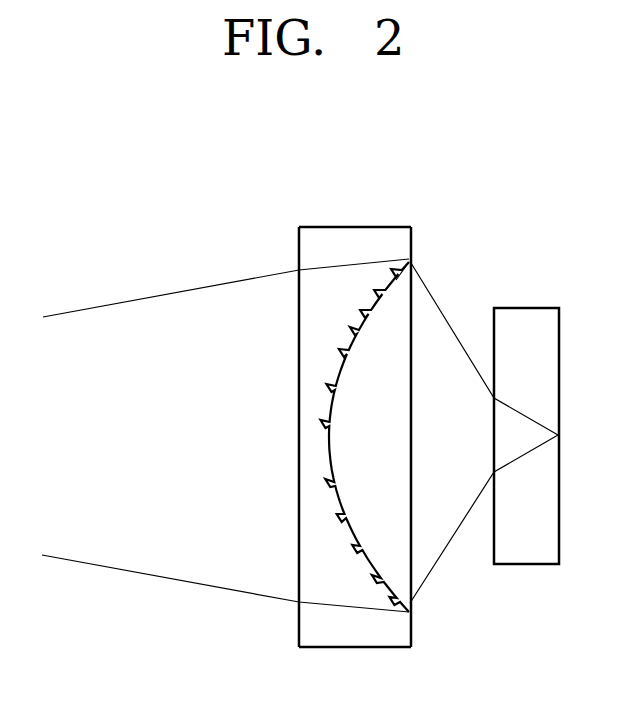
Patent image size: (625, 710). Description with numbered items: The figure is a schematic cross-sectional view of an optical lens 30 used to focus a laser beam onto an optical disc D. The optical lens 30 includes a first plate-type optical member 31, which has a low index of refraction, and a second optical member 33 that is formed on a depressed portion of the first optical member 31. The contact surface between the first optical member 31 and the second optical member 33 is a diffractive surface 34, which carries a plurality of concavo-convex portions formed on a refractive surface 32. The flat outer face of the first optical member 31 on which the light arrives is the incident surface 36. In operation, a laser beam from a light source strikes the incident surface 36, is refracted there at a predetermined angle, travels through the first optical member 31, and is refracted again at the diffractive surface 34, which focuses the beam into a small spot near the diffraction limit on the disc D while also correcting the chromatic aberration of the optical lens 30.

The optical lens 30 is at (377, 207).
The first plate-type optical member 31 is at (309, 232).
The refractive surface 32 is at (420, 281).
The second optical member 33 is at (412, 415).
The diffractive surface 34 is at (343, 340).
The incident surface 36 is at (299, 485).
The optical disc D is at (531, 316).